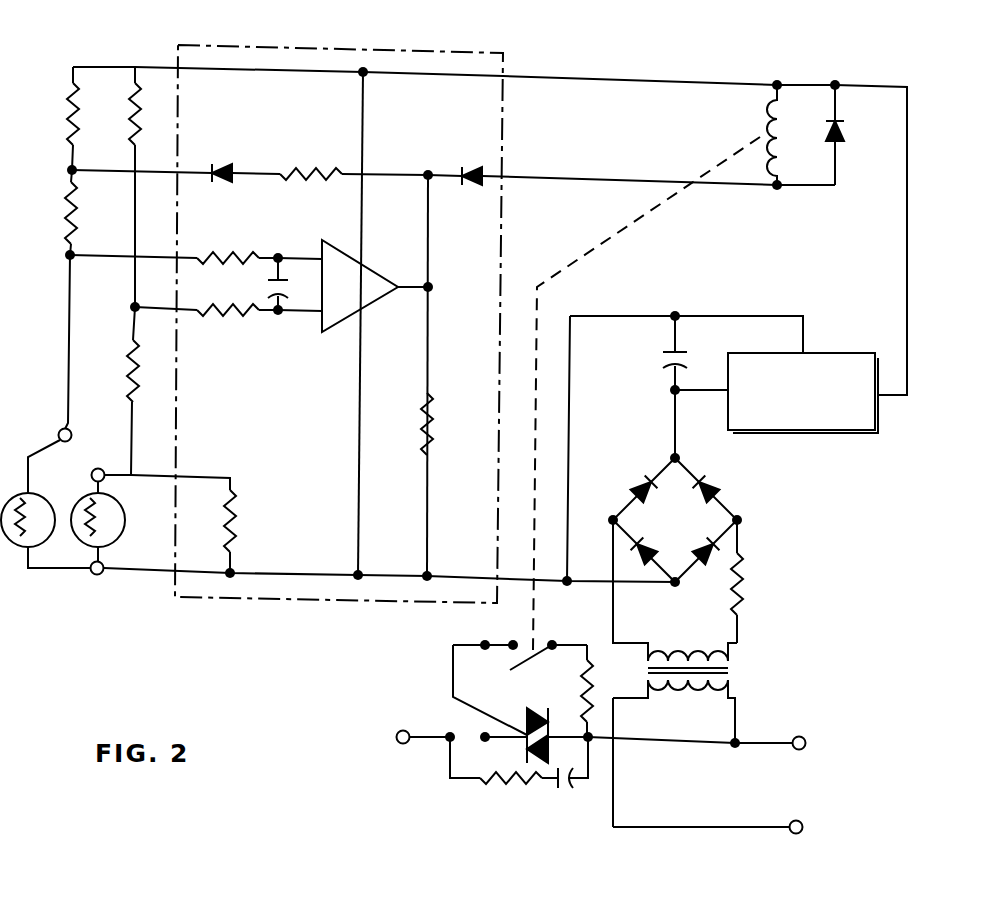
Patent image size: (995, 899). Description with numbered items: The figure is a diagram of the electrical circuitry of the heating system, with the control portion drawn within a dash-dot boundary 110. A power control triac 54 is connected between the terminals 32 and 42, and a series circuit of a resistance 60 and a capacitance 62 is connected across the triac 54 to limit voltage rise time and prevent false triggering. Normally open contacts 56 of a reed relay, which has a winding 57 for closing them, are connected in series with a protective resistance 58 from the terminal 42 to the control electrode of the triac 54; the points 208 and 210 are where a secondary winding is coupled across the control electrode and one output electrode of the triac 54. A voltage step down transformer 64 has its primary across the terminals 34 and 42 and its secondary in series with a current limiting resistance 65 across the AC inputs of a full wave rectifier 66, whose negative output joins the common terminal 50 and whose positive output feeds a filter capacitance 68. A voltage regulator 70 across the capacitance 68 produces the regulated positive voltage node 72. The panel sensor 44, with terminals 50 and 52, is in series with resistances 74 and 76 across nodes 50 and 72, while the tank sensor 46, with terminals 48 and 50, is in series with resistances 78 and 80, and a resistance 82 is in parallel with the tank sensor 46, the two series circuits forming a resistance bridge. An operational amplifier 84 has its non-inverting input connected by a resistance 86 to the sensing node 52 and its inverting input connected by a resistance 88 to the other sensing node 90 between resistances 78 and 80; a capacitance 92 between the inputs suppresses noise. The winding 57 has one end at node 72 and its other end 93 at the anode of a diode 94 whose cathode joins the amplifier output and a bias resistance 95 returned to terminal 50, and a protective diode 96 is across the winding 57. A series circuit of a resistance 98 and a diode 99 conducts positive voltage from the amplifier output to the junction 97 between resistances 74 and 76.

The control circuit 110 is at (416, 48).
The regulated positive voltage node 72 is at (600, 80).
The resistance 76 is at (80, 112).
The resistance 74 is at (82, 212).
The junction 97 is at (88, 170).
The resistance 80 is at (142, 118).
The sensing node 90 is at (137, 304).
The resistance 78 is at (126, 342).
The resistance 82 is at (238, 508).
The resistance 86 is at (208, 252).
The resistance 88 is at (200, 318).
The capacitance 92 is at (293, 303).
The operational amplifier 84 is at (370, 270).
The bias resistance 95 is at (433, 392).
The diode 99 is at (222, 163).
The resistance 98 is at (283, 170).
The diode 94 is at (470, 166).
The other end of winding 93 is at (563, 182).
The winding 57 is at (762, 113).
The protective diode 96 is at (848, 136).
The filter capacitance 68 is at (663, 362).
The voltage regulator 70 is at (875, 436).
The full wave rectifier 66 is at (731, 515).
The current limiting resistance 65 is at (746, 575).
The voltage step down transformer 64 is at (735, 672).
The point 210 is at (486, 640).
The normally open contacts 56 is at (515, 668).
The point 208 is at (484, 732).
The power control triac 54 is at (535, 707).
The terminal 32 is at (396, 733).
The resistance 60 is at (482, 786).
The capacitance 62 is at (572, 785).
The protective resistance 58 is at (595, 682).
The terminal 42 is at (806, 744).
The terminal 34 is at (803, 824).
The panel sensor 44 is at (22, 495).
The tank sensor 46 is at (107, 577).
The sensing node 52 is at (70, 431).
The terminal 48 is at (94, 470).
The common terminal 50 is at (90, 576).